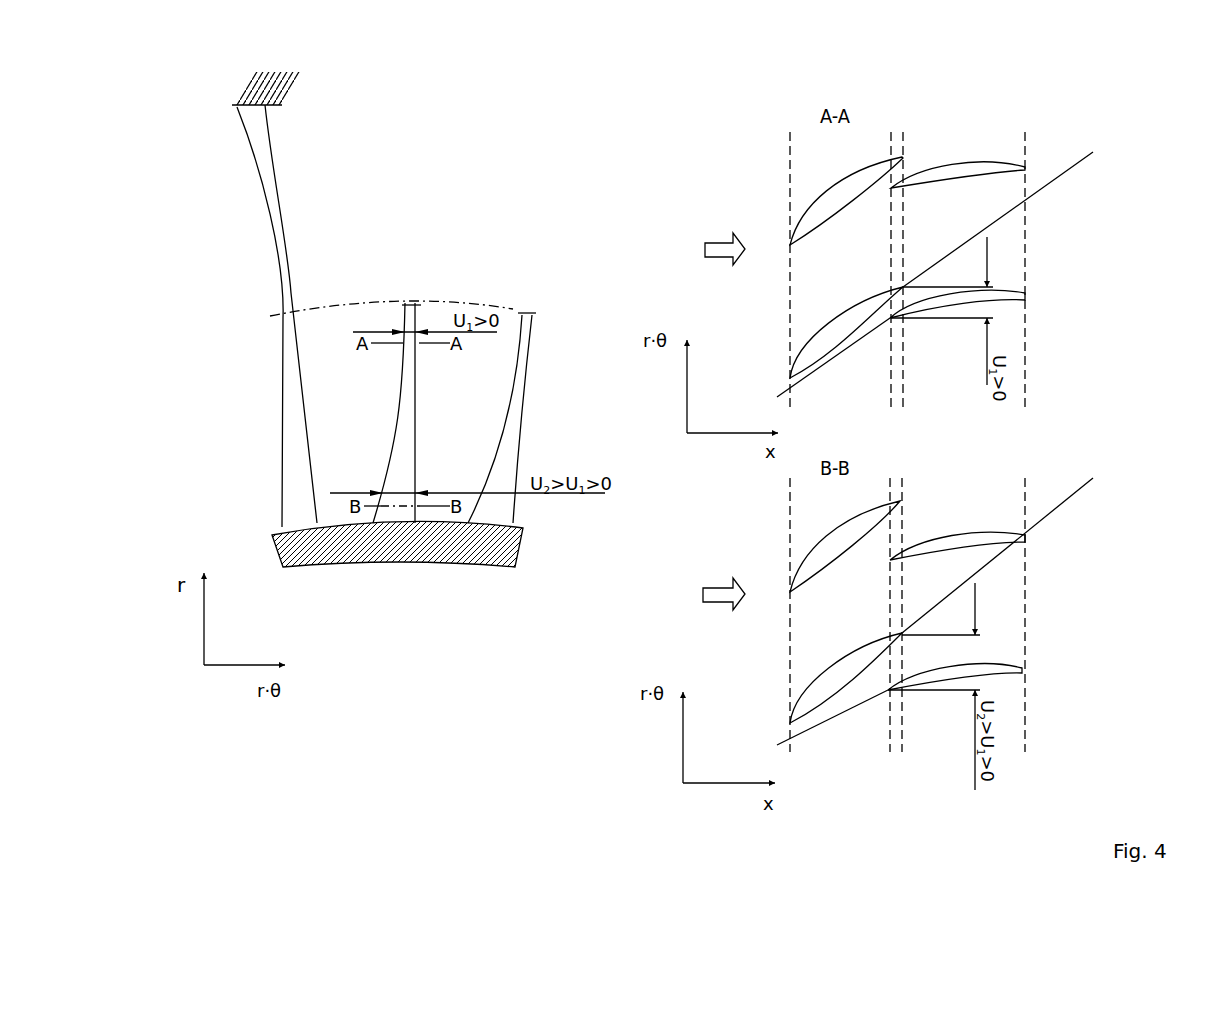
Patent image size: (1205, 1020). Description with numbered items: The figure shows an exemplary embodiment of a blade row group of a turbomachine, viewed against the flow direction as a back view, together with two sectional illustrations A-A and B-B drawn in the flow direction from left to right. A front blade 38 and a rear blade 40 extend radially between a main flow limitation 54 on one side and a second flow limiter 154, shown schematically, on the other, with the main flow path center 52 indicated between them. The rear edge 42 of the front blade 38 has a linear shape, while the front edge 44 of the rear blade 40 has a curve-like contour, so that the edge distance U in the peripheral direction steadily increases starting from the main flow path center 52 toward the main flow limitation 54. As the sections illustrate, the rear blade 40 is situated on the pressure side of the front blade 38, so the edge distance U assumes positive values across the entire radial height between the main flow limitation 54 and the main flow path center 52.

The second flow limiter 154 is at (299, 85).
The main flow path center 52 is at (502, 308).
The main flow limitation 54 is at (510, 543).
The rear edge 42 is at (417, 368).
The front edge 44 is at (395, 443).
The front blade 38 is at (832, 332).
The rear blade 40 is at (1003, 297).